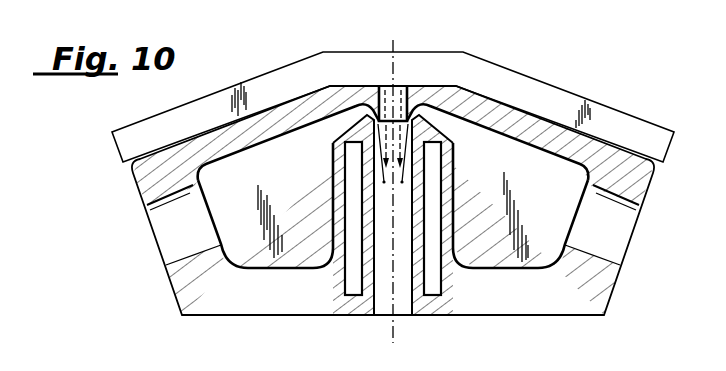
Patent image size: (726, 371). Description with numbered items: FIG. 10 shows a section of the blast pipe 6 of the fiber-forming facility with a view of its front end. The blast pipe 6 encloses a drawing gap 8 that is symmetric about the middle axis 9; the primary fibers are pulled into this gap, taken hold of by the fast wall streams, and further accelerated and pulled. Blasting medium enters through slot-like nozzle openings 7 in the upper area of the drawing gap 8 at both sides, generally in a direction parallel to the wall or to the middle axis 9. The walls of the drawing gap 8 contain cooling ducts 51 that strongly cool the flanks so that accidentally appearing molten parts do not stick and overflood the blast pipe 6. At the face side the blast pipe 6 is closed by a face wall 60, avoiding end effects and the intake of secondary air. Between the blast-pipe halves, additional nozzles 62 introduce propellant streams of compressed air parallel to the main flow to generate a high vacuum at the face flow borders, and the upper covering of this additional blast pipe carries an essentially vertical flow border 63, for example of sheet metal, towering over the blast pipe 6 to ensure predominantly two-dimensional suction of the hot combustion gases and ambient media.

The blast pipe 6 is at (155, 274).
The slot-like nozzle openings 7 is at (345, 128).
The drawing gap 8 is at (400, 213).
The middle axis 9 is at (386, 327).
The cooling ducts 51 is at (355, 176).
The face wall 60 is at (402, 302).
The nozzles 62 is at (397, 90).
The vertical flow border 63 is at (554, 100).